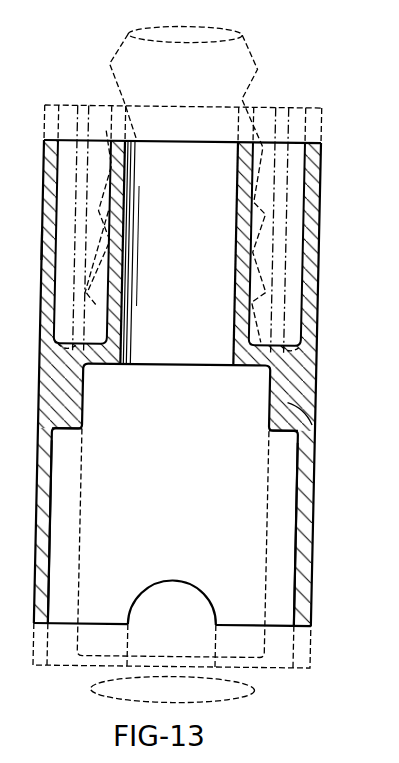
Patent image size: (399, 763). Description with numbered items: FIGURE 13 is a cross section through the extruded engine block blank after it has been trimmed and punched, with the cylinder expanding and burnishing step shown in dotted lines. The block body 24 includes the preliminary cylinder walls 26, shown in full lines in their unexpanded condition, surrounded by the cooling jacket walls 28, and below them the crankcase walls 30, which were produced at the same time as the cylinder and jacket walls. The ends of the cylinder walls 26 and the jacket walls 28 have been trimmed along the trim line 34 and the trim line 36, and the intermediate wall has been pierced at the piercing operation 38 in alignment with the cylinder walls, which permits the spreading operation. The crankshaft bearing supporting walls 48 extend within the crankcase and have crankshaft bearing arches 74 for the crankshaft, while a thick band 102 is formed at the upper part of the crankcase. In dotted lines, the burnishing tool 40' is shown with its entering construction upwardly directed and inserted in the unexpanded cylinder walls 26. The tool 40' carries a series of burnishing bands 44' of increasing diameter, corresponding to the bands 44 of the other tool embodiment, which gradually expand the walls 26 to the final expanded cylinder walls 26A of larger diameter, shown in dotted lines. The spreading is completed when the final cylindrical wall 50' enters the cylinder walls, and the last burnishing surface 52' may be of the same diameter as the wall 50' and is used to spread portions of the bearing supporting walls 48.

The housing body 24 is at (21, 245).
The preliminary cylinder walls 26 is at (243, 222).
The expanded cylinder walls 26A is at (283, 173).
The cooling jacket walls 28 is at (320, 200).
The crankcase walls 30 is at (308, 533).
The trim line 34 is at (150, 140).
The trim line 36 is at (55, 626).
The piercing operation 38 is at (143, 357).
The burnishing tool 40' is at (154, 698).
The burnishing bands 44 is at (83, 213).
The burnishing bands 44' is at (165, 189).
The crankshaft bearing supporting walls 48 is at (283, 603).
The final cylindrical wall 50' is at (168, 559).
The last burnishing surface 52' is at (149, 327).
The crankshaft bearing arches 74 is at (180, 579).
The thick band 102 is at (313, 431).